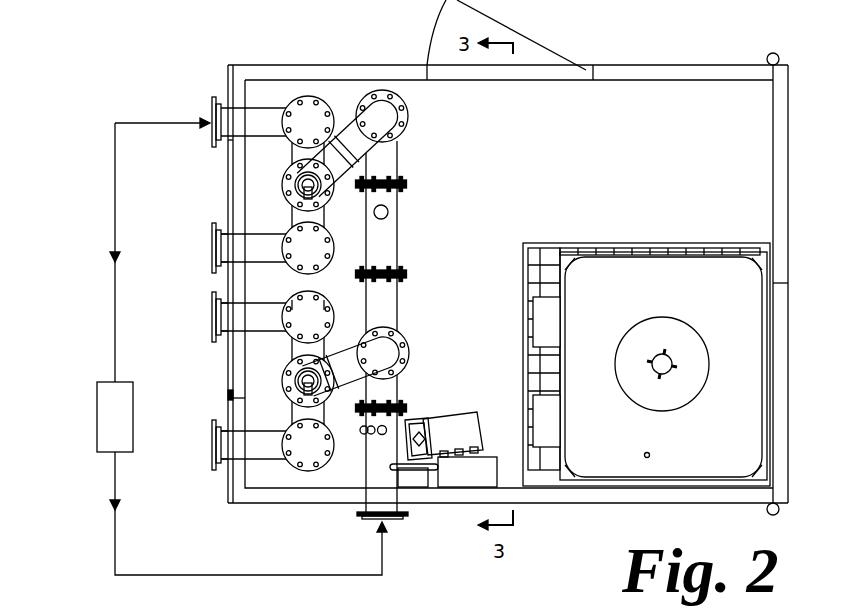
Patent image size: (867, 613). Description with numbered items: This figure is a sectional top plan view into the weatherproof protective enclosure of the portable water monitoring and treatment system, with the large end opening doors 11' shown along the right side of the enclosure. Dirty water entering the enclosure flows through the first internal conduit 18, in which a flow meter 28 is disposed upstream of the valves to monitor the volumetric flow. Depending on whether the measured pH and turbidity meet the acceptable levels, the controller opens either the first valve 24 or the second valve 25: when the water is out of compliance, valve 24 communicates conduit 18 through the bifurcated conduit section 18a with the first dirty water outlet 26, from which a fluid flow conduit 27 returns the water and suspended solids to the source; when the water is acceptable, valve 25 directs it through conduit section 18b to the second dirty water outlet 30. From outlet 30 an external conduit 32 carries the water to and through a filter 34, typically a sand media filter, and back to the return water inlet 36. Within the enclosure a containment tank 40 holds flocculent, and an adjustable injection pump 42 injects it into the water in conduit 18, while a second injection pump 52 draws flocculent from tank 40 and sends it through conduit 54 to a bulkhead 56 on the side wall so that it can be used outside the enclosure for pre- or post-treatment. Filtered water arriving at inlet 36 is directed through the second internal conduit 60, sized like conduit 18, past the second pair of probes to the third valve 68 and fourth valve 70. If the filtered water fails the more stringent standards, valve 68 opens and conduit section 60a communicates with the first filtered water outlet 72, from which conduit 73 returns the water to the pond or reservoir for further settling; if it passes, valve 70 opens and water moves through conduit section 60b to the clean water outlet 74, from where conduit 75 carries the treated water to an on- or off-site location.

The end opening doors 11' is at (536, 284).
The first internal conduit 18 is at (389, 157).
The bifurcated conduit section 18a is at (299, 223).
The conduit section 18b is at (263, 115).
The first valve 24 is at (332, 244).
The second valve 25 is at (321, 103).
The first dirty water outlet 26 is at (226, 224).
The fluid flow conduit 27 is at (205, 249).
The flow meter 28 is at (390, 246).
The second dirty water outlet 30 is at (218, 97).
The external conduit 32 is at (178, 122).
The filter 34 is at (98, 418).
The return water inlet 36 is at (407, 510).
The containment tank 40 is at (765, 318).
The adjustable injection pump 42 is at (560, 420).
The second injection pump 52 is at (560, 320).
The conduit 54 is at (273, 396).
The bulkhead 56 is at (230, 390).
The second internal conduit 60 is at (333, 359).
The conduit section 60a is at (260, 453).
The conduit section 60b is at (275, 293).
The third valve 68 is at (300, 470).
The fourth valve 70 is at (310, 315).
The first filtered water outlet 72 is at (225, 468).
The conduit 73 is at (201, 445).
The clean water outlet 74 is at (220, 296).
The conduit 75 is at (206, 316).